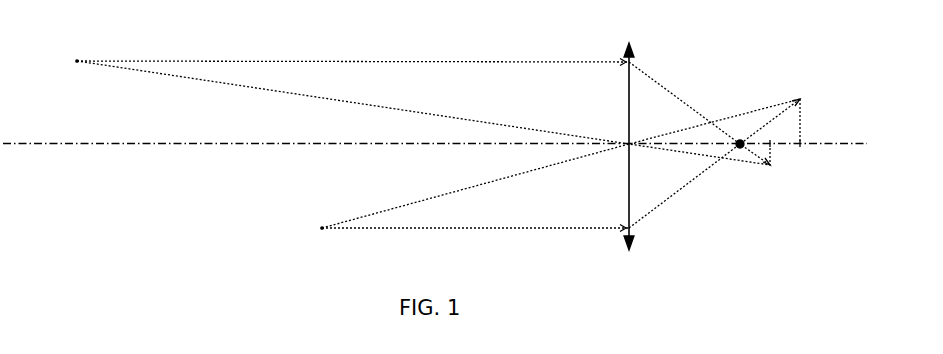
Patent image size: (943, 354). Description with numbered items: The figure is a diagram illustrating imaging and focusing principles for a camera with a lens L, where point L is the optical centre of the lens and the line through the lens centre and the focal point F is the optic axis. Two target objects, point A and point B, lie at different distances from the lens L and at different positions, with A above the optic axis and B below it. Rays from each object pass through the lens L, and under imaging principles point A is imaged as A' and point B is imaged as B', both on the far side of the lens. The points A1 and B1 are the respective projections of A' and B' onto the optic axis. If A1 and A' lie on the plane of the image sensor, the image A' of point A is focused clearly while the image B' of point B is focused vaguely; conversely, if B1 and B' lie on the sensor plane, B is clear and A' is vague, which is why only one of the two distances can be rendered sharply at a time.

The target object point A is at (414, 111).
The target object point B is at (549, 170).
The lens L is at (619, 146).
The focal point F is at (714, 145).
The image of point A A' is at (772, 170).
The image of point B B' is at (803, 112).
The projection point of A' on the optic axis A1 is at (769, 139).
The projection point of B' on the optic axis B1 is at (805, 139).